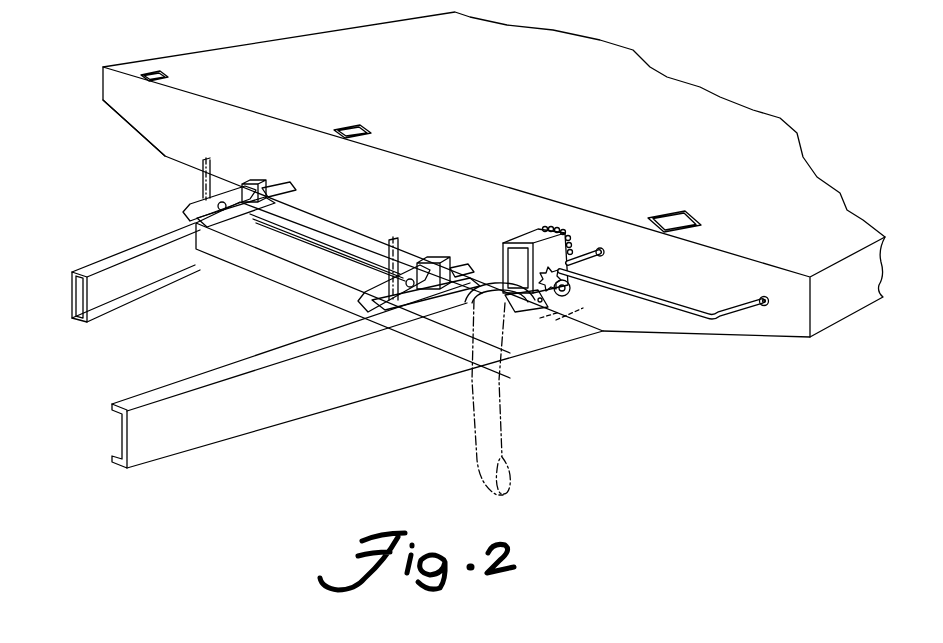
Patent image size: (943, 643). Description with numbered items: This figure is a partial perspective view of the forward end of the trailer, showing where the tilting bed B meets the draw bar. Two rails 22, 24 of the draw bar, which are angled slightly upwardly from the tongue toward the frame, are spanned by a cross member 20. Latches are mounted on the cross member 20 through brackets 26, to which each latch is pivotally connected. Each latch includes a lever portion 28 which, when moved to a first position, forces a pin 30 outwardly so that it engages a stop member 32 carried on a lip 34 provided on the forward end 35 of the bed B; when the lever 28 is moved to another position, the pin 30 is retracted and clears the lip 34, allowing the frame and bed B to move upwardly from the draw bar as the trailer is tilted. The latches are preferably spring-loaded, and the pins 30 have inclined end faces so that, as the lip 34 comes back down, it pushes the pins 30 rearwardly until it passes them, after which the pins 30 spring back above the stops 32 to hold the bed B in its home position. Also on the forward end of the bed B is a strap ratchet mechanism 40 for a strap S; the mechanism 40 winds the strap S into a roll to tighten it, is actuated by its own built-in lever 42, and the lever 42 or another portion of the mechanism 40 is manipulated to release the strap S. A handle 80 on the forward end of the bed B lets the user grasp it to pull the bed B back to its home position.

The bed B is at (607, 72).
The strap S is at (495, 428).
The cross member 20 is at (252, 267).
The rail 22 is at (235, 417).
The rail 24 is at (92, 295).
The bracket 26 is at (243, 205).
The lever portion 28 is at (200, 211).
The pin 30 is at (248, 192).
The stop member 32 is at (255, 190).
The lip 34 is at (253, 195).
The forward end 35 is at (168, 127).
The strap ratchet mechanism 40 is at (586, 220).
The lever 42 is at (566, 312).
The handle 80 is at (690, 313).